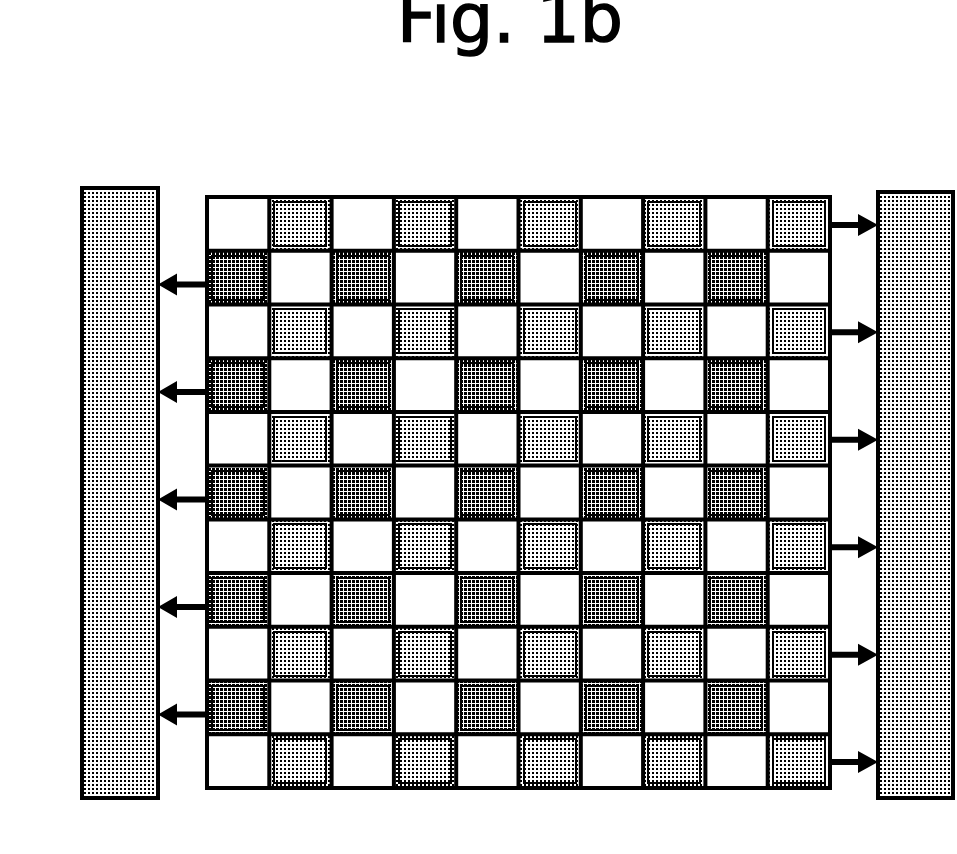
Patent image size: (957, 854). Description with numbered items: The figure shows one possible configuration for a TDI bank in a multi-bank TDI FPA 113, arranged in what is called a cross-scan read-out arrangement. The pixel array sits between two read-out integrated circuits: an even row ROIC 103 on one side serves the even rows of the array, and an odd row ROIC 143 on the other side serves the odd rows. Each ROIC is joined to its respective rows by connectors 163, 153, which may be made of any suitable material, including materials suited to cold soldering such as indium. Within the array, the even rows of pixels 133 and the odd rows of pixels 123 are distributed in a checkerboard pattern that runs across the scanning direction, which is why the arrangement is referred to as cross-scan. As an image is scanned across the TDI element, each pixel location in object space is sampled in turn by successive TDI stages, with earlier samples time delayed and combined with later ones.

The even row ROIC 103 is at (124, 197).
The multi-bank TDI FPA 113 is at (370, 197).
The odd rows of pixels 123 is at (535, 220).
The even rows of pixels 133 is at (612, 254).
The odd row ROIC 143 is at (940, 207).
The connectors to odd rows 153 is at (857, 213).
The connectors to even rows 163 is at (174, 277).